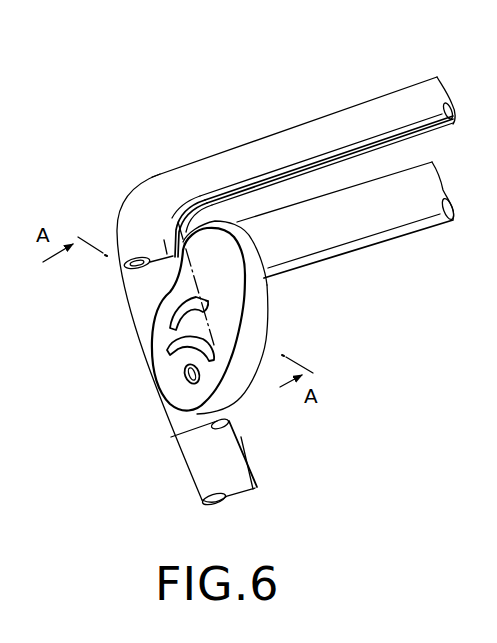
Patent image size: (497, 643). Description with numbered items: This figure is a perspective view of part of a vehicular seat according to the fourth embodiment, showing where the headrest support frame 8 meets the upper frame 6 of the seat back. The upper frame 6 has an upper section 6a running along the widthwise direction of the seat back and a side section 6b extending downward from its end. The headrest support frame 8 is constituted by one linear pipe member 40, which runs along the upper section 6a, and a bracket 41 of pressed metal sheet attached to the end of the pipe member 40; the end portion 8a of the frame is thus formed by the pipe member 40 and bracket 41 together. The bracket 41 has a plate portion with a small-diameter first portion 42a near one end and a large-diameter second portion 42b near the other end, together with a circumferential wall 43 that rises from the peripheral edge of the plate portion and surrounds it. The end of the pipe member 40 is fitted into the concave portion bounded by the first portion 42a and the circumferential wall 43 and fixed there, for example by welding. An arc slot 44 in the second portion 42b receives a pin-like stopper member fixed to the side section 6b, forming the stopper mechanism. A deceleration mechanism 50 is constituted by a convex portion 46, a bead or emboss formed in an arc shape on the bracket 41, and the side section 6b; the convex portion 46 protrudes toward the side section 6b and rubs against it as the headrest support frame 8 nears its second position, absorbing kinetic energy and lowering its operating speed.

The upper frame 6 is at (304, 104).
The upper section 6a is at (375, 107).
The side section 6b is at (238, 463).
The headrest support frame 8 is at (325, 288).
The end portion of bracket tube 8a is at (428, 233).
The pipe member 40 is at (408, 228).
The bracket 41 is at (284, 349).
The first portion 42a is at (197, 247).
The second portion 42b is at (162, 380).
The circumferential wall 43 is at (245, 243).
The arc slot 44 is at (165, 348).
The convex portion 46 is at (158, 321).
The deceleration mechanism 50 is at (220, 298).